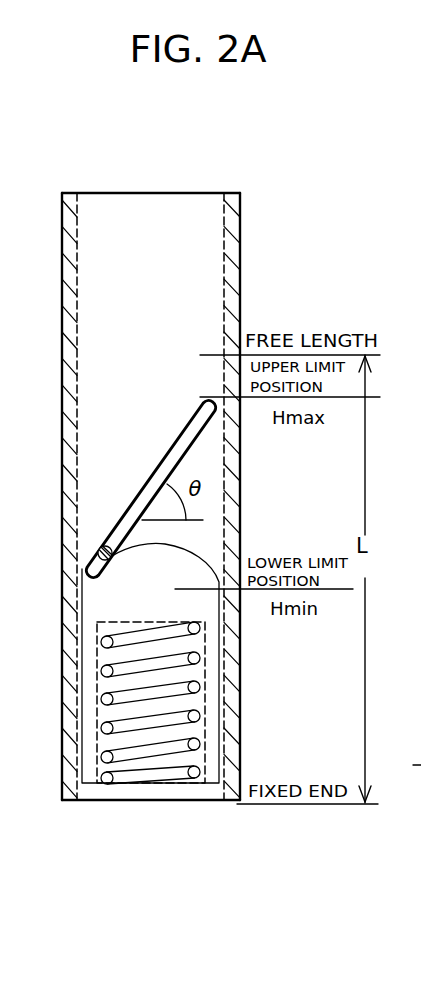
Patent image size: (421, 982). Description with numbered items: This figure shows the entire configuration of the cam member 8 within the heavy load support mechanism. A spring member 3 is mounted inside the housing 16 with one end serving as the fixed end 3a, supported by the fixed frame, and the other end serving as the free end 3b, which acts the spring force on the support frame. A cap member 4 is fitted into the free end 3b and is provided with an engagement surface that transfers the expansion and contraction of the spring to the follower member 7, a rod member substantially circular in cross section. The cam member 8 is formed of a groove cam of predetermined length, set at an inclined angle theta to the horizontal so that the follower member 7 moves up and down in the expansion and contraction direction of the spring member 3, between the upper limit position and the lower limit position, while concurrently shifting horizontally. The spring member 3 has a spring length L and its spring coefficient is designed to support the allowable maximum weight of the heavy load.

The housing 16 is at (205, 193).
The cam member 8 is at (166, 445).
The follower member 7 is at (103, 546).
The cap member 4 is at (90, 598).
The spring member 3 is at (106, 745).
The free end 3b is at (123, 633).
The fixed end 3a is at (145, 778).